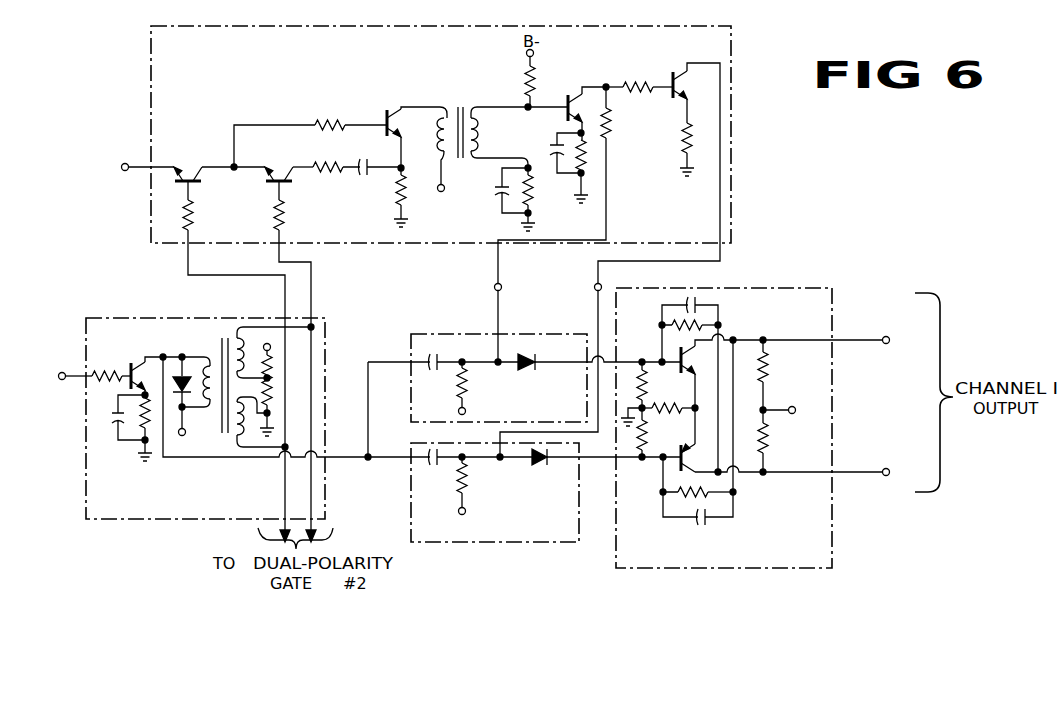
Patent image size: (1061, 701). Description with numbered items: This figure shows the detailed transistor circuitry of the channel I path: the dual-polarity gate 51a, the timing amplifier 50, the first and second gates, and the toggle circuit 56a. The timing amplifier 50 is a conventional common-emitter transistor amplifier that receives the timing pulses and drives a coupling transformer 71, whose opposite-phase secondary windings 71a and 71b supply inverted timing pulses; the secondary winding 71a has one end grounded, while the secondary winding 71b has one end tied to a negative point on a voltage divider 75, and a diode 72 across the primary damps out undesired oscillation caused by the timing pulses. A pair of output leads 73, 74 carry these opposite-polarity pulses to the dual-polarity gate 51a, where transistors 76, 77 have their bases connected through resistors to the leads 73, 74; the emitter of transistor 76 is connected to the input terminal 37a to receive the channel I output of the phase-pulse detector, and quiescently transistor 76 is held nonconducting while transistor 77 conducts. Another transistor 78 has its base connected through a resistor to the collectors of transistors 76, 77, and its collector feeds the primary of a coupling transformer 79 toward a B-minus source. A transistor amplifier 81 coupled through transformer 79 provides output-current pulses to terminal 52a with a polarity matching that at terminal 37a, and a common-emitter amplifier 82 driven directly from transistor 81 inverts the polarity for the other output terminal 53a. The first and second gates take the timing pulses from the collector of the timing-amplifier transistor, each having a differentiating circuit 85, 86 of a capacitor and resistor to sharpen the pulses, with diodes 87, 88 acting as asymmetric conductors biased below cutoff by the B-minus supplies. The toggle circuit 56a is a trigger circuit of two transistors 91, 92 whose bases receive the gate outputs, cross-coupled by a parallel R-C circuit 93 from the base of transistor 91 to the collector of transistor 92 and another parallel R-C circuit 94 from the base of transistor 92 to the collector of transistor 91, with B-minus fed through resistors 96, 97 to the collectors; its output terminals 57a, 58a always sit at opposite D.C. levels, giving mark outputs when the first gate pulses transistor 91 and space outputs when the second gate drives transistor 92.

The dual-polarity gate 51a is at (151, 57).
The input terminal 37a is at (125, 163).
The transistor 76 is at (193, 184).
The transistor 77 is at (285, 184).
The transistor 78 is at (387, 117).
The coupling transformer 79 is at (457, 110).
The transistor amplifier 81 is at (568, 95).
The common-emitter transistor amplifier 82 is at (673, 70).
The output lead 73 is at (188, 257).
The output lead 74 is at (311, 284).
The timing amplifier 50 is at (98, 318).
The coupling transformer 71 is at (222, 342).
The secondary winding 71b is at (233, 337).
The secondary winding 71a is at (234, 447).
The diode 72 is at (186, 409).
The voltage divider 75 is at (268, 378).
The output terminal 52a is at (494, 287).
The output terminal 53a is at (594, 287).
The differentiating circuit 85 is at (499, 378).
The differentiating circuit 86 is at (495, 492).
The diode 87 is at (539, 366).
The diode 88 is at (540, 463).
The toggle circuit 56a is at (762, 287).
The transistor 91 is at (686, 368).
The transistor 92 is at (694, 446).
The parallel R-C circuit 93 is at (710, 313).
The parallel R-C circuit 94 is at (720, 508).
The resistor 96 is at (766, 378).
The resistor 97 is at (767, 425).
The output terminal 57a is at (886, 344).
The output terminal 58a is at (883, 469).